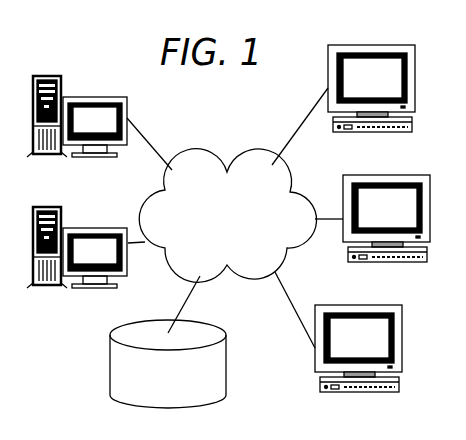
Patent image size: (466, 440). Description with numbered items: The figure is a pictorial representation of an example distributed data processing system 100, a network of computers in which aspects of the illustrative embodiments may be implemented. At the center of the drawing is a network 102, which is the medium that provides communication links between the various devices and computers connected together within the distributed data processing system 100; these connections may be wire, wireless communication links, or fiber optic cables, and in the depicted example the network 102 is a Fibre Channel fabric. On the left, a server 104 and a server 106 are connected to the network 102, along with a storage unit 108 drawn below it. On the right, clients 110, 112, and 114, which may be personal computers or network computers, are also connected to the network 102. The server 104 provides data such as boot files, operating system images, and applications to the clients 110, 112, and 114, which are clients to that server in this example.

The distributed data processing system 100 is at (75, 342).
The network 102 is at (198, 158).
The server 104 is at (92, 89).
The server 106 is at (91, 221).
The storage unit 108 is at (228, 357).
The client 110 is at (372, 43).
The client 112 is at (400, 174).
The client 114 is at (343, 305).